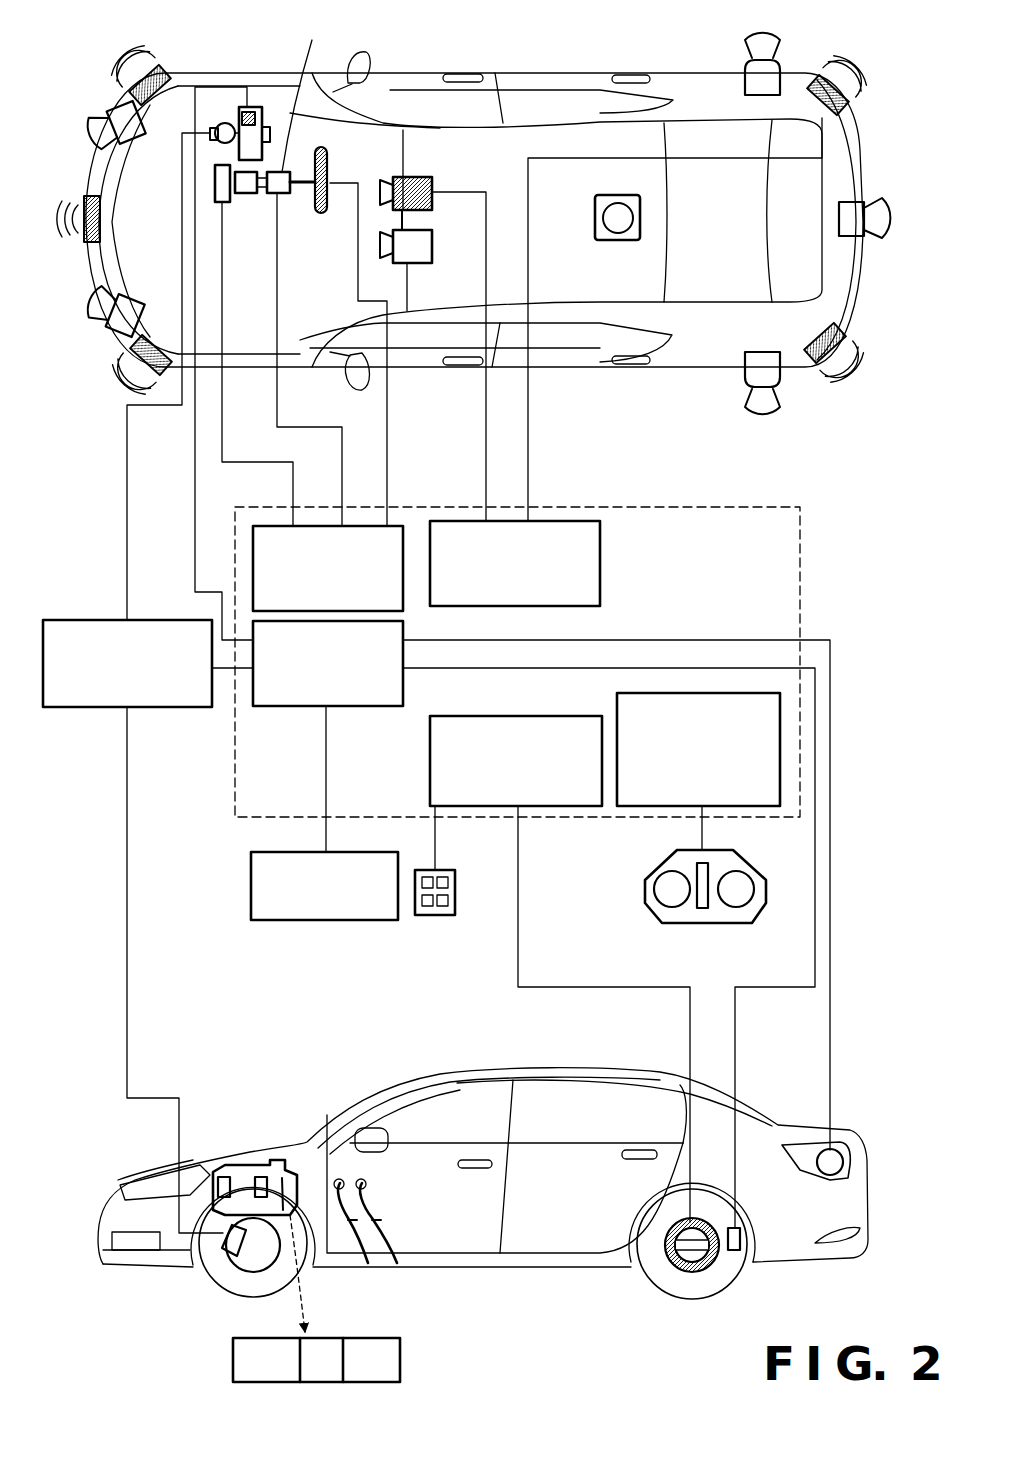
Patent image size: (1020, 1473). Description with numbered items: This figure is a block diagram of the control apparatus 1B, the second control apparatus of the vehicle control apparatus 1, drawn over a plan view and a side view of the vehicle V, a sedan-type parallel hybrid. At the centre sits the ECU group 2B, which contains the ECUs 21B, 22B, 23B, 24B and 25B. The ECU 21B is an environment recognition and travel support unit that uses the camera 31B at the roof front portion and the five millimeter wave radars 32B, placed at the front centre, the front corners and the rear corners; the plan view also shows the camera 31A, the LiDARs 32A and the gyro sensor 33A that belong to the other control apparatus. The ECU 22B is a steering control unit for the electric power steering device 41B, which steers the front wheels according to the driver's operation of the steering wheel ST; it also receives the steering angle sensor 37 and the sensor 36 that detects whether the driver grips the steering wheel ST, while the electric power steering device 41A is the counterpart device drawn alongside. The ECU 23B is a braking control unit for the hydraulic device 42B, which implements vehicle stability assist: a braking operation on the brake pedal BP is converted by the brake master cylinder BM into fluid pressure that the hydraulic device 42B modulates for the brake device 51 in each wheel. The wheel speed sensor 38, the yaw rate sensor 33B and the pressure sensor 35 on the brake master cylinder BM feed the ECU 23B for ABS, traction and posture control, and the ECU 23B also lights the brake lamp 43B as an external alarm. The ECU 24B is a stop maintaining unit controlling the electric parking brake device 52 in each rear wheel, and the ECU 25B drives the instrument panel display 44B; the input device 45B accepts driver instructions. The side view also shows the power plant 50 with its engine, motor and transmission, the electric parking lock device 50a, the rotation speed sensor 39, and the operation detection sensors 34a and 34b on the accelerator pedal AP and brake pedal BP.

The vehicle control apparatus 1 is at (885, 375).
The control apparatus 1B is at (870, 490).
The ECU group 2B is at (436, 506).
The ECU 21B is at (555, 521).
The ECU 22B is at (270, 526).
The ECU 23B is at (275, 707).
The ECU 24B is at (430, 773).
The ECU 25B is at (642, 806).
The detection unit 31A is at (415, 263).
The detection unit 31B is at (425, 177).
The detection unit 32A is at (128, 142).
The detection unit 32B is at (165, 74).
The gyro sensor 33A is at (610, 240).
The yaw rate sensor 33B is at (308, 920).
The operation detection sensor 34a is at (332, 1146).
The operation detection sensor 34b is at (372, 1188).
The pressure sensor 35 is at (249, 112).
The sensor 36 is at (330, 172).
The steering angle sensor 37 is at (231, 202).
The wheel speed sensor 38 is at (740, 1252).
The rotation speed sensor 39 is at (260, 1177).
The electric power steering device 41A is at (262, 193).
The electric power steering device 41B is at (292, 172).
The hydraulic device 42B is at (90, 620).
The information output device 43B is at (845, 1162).
The information output device 44B is at (658, 923).
The input device 45B is at (438, 915).
The power plant 50 is at (283, 1160).
The electric parking lock device 50a is at (222, 1177).
The brake device 51 is at (232, 1258).
The electric parking brake device 52 is at (682, 1270).
The steering wheel ST is at (328, 148).
The brake master cylinder BM is at (262, 110).
The accelerator pedal AP is at (368, 1263).
The brake pedal BP is at (397, 1263).
The vehicle V is at (880, 97).